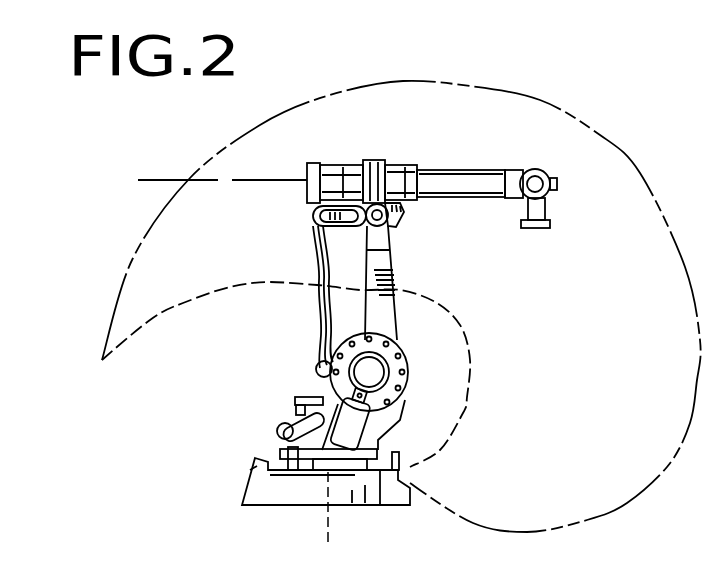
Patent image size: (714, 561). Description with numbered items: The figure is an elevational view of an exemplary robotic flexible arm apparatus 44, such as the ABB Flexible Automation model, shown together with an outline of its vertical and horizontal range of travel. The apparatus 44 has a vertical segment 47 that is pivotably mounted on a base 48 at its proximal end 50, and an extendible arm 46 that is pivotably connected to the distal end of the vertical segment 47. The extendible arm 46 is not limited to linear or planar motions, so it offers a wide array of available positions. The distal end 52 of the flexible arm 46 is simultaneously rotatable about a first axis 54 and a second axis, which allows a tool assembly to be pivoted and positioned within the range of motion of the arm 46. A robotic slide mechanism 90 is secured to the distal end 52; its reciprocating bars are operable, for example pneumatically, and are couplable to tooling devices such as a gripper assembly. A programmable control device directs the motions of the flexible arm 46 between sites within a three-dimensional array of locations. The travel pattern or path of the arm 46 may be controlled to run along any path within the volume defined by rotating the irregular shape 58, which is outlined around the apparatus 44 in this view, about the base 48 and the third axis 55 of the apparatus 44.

The robotic flexible arm apparatus 44 is at (563, 75).
The extendible arm 46 is at (470, 198).
The vertical segment 47 is at (400, 317).
The base 48 is at (250, 504).
The proximal end 50 is at (398, 343).
The distal end 52 is at (541, 171).
The first axis 54 is at (178, 178).
The third axis 55 is at (328, 537).
The irregular shape 58 is at (275, 112).
The robotic slide mechanism 90 is at (546, 221).